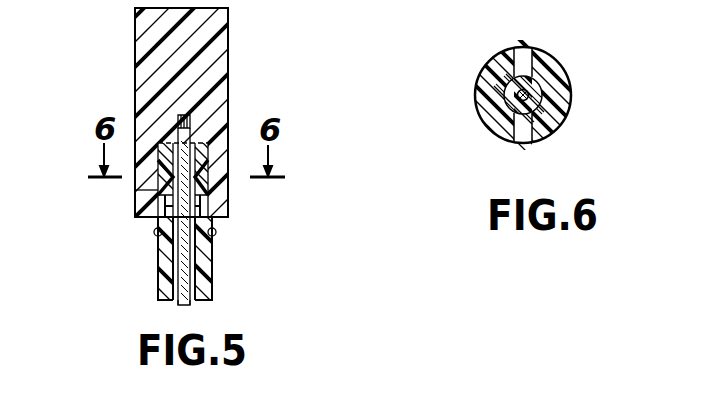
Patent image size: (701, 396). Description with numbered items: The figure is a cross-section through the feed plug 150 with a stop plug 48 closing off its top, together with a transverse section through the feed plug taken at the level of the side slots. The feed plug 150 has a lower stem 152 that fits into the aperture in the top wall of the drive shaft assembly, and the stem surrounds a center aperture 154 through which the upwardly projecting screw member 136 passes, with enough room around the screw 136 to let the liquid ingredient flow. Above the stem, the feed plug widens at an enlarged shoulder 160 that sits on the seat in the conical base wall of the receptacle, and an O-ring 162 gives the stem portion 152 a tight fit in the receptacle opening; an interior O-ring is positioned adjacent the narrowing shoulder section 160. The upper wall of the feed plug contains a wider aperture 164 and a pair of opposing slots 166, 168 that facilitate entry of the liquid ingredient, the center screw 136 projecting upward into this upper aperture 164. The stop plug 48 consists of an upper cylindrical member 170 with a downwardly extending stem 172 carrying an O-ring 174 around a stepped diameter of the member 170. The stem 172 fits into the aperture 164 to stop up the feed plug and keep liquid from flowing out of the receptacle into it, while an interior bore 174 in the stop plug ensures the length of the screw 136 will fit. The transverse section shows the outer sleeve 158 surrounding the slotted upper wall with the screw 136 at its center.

In FIG. 5, the plug 48 is at (231, 30).
In FIG. 5, the upper cylindrical member 170 is at (135, 40).
In FIG. 5, the O-ring 174 is at (228, 80).
In FIG. 5, the wider aperture 164 is at (226, 148).
In FIG. 6, the wider aperture 164 is at (548, 88).
In FIG. 5, the stem 172 is at (135, 192).
In FIG. 5, the sleeve 158 is at (136, 210).
In FIG. 6, the sleeve 158 is at (563, 97).
In FIG. 5, the slot 166 is at (222, 204).
In FIG. 6, the slot 166 is at (526, 57).
In FIG. 5, the feed plug 150 is at (242, 212).
In FIG. 5, the enlarged shoulder 160 is at (156, 229).
In FIG. 5, the O-ring 162 is at (214, 234).
In FIG. 5, the lower stem 152 is at (160, 272).
In FIG. 5, the center aperture 154 is at (213, 283).
In FIG. 5, the screw member 136 is at (182, 306).
In FIG. 6, the screw member 136 is at (505, 100).
In FIG. 6, the slot 168 is at (530, 135).